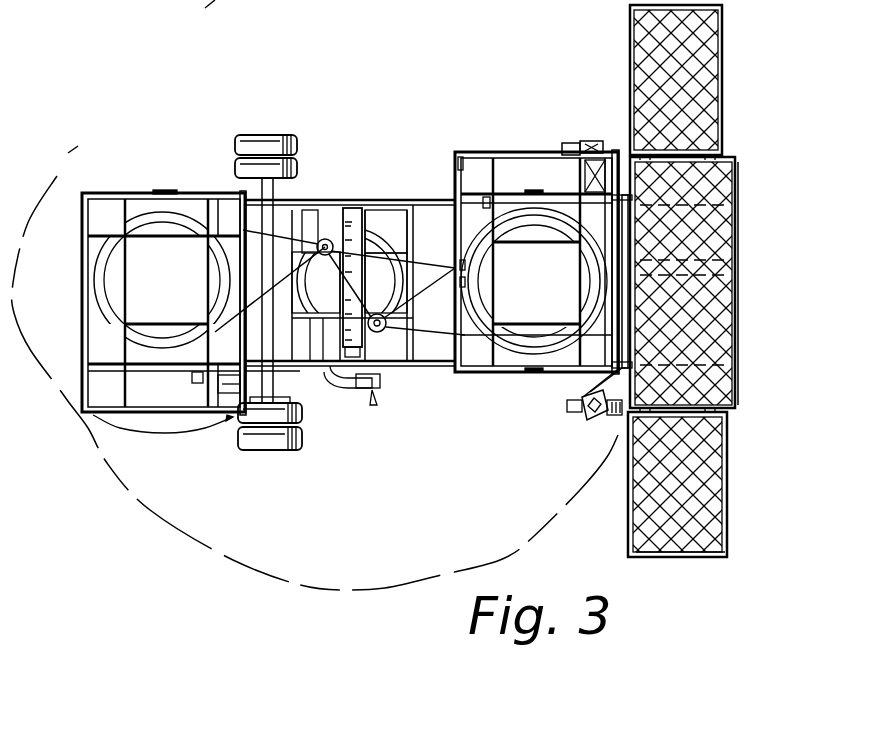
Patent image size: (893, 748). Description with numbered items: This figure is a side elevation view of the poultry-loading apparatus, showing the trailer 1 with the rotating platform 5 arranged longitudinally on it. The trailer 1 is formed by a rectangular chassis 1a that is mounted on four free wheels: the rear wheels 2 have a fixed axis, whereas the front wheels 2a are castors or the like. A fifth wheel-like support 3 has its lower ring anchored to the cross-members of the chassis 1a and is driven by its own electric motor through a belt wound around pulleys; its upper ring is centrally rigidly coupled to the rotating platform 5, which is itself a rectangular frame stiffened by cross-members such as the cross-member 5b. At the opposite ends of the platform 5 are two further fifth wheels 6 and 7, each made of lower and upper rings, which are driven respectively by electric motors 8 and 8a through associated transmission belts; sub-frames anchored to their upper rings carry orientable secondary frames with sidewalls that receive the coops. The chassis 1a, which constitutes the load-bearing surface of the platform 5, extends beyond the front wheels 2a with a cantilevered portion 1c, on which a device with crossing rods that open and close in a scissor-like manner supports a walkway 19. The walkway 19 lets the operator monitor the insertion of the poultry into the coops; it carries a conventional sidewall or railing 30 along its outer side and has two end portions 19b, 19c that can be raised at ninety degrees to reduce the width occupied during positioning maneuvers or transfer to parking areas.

The trailer 1 is at (341, 158).
The rectangular chassis 1a is at (436, 372).
The cantilevered portion 1c is at (627, 195).
The rear wheels 2 is at (250, 145).
The front wheels 2a is at (572, 142).
The fifth wheel-like support 3 is at (385, 243).
The rotating platform 5 is at (428, 198).
The cross-member 5b is at (347, 347).
The fifth wheel 6 is at (147, 347).
The fifth wheel 7 is at (522, 348).
The electric motor 8 is at (328, 243).
The electric motor 8a is at (389, 335).
The walkway 19 is at (743, 264).
The end portion of walkway 19b is at (683, 496).
The end portion of walkway 19c is at (650, 153).
The sidewall or railing 30 is at (737, 356).